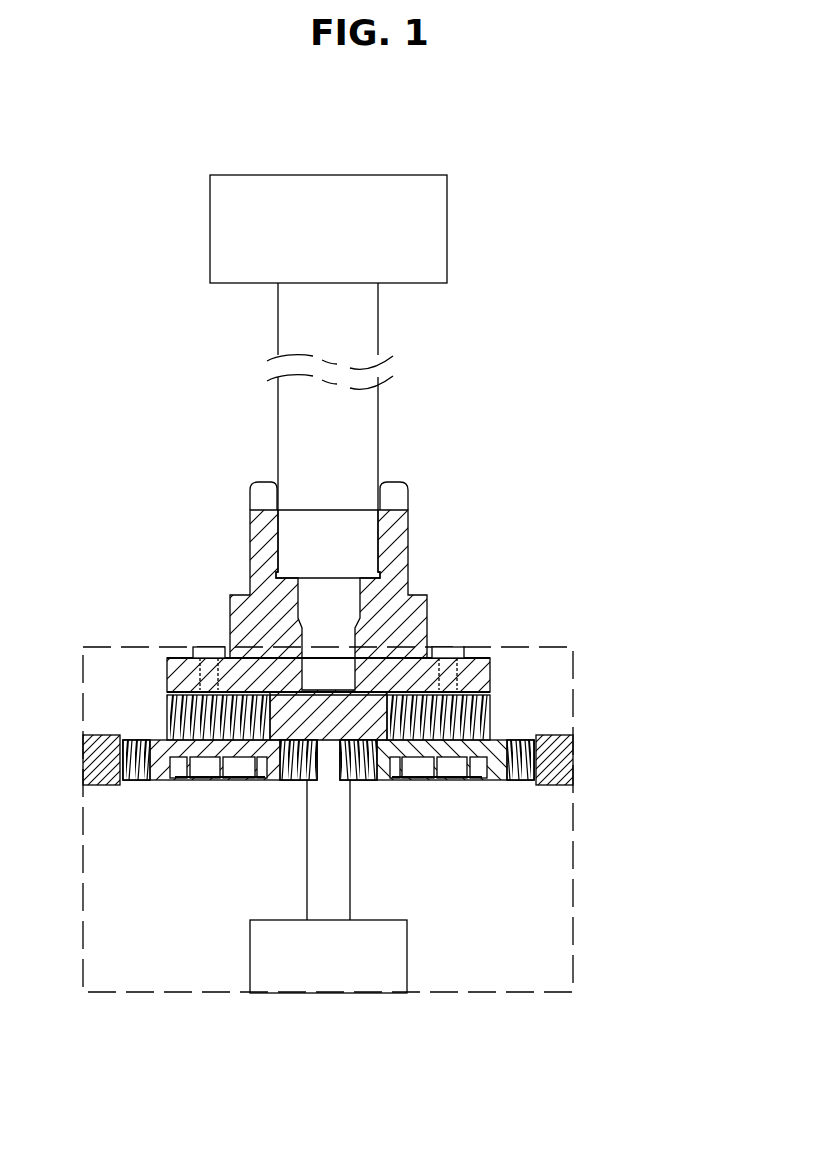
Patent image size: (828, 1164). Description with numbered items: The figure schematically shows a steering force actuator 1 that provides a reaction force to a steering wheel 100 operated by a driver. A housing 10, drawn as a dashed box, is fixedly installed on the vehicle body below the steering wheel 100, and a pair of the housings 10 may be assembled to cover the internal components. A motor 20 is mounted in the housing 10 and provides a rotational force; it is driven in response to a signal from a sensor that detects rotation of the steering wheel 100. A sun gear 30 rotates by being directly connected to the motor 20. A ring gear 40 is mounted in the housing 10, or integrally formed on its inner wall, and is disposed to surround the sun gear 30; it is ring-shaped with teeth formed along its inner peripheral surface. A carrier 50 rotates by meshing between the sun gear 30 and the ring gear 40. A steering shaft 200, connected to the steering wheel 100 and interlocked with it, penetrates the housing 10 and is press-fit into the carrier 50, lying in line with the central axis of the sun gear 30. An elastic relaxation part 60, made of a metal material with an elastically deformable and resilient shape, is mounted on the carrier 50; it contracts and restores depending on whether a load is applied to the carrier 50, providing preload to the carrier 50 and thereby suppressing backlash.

The steering force actuator 1 is at (572, 132).
The housing 10 is at (573, 888).
The motor 20 is at (360, 968).
The sun gear 30 is at (349, 707).
The ring gear 40 is at (556, 764).
The carrier 50 is at (412, 553).
The elastic relaxation part 60 is at (195, 666).
The steering wheel 100 is at (210, 226).
The steering shaft 200 is at (278, 429).